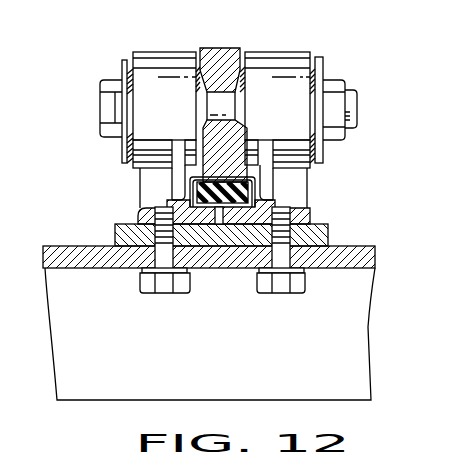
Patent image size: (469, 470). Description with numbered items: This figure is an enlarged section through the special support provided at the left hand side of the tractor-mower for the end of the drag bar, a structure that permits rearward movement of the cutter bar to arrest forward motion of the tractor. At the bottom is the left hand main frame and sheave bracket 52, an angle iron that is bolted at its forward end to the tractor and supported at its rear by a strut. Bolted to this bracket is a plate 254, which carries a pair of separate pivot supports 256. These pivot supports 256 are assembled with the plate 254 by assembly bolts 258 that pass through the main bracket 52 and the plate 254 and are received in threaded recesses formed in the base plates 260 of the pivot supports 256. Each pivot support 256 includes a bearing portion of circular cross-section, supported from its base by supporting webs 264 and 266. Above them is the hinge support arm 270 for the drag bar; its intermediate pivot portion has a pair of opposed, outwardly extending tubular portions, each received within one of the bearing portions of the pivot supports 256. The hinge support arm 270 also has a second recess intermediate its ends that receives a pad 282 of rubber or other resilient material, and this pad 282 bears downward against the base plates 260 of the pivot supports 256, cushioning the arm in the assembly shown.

The left hand main frame and sheave bracket 52 is at (70, 311).
The plate 254 is at (328, 232).
The pivot supports 256 is at (165, 51).
The assembly bolts 258 is at (162, 284).
The base plates 260 is at (140, 212).
The supporting web 264 is at (145, 183).
The supporting web 266 is at (157, 168).
The hinge support arm 270 is at (226, 41).
The pad 282 is at (250, 193).